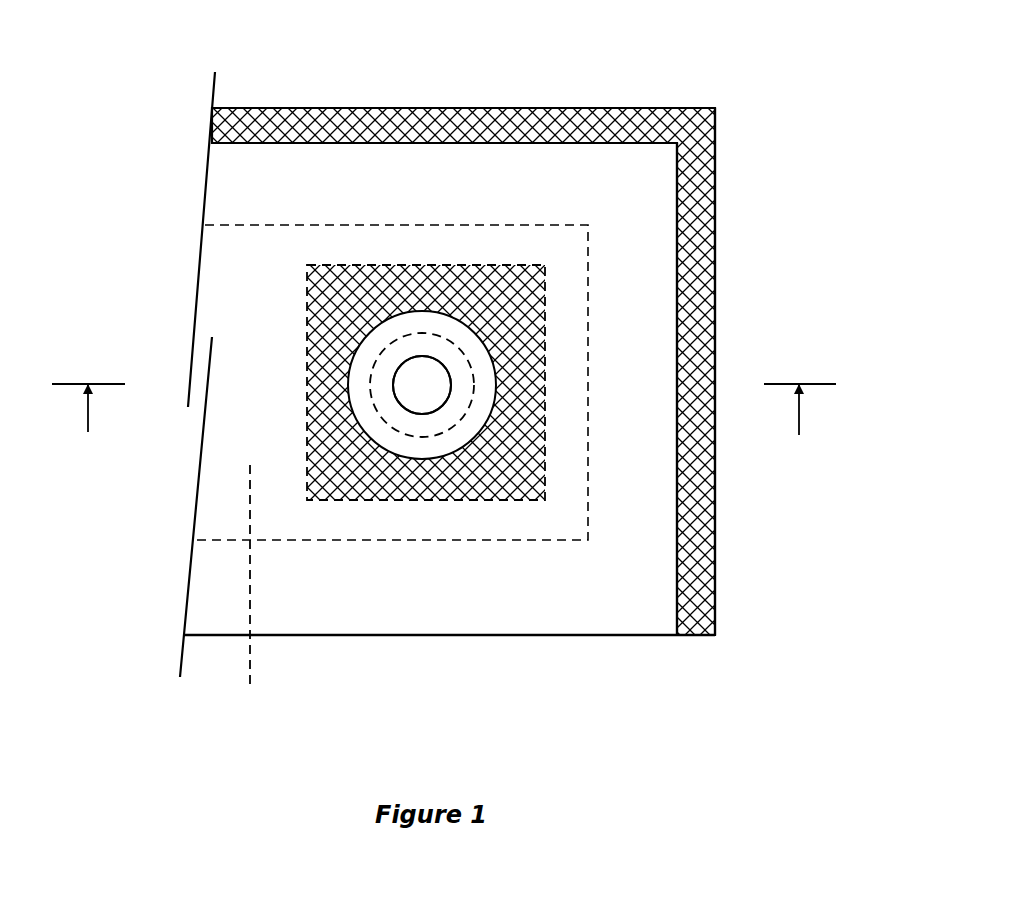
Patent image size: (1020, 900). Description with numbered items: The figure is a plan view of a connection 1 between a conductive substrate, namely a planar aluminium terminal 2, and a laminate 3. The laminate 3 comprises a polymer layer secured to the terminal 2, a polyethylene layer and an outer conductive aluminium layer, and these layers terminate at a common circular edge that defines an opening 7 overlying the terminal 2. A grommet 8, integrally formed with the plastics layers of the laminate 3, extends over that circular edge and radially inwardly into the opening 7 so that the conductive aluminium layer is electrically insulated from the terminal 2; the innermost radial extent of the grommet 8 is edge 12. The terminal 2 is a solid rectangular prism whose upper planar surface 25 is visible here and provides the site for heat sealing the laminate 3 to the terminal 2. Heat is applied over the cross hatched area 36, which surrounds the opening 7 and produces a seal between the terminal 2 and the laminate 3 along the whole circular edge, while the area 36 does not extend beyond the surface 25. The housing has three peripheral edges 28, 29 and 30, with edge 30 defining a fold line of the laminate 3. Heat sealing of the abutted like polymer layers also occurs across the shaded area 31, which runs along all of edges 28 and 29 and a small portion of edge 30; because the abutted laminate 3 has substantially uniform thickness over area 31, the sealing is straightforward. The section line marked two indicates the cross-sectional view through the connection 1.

The connection 1 is at (845, 119).
The planar aluminium terminal 2 is at (444, 551).
The laminate 3 is at (660, 166).
The opening 7 is at (410, 330).
The grommet 8 is at (430, 320).
The edge 12 is at (437, 414).
The upper planar surface 25 is at (422, 385).
The peripheral edge 28 is at (555, 108).
The peripheral edge 29 is at (715, 292).
The peripheral edge 30 is at (564, 638).
The heat sealing area 31 is at (458, 118).
The heat sealing area 36 is at (345, 310).